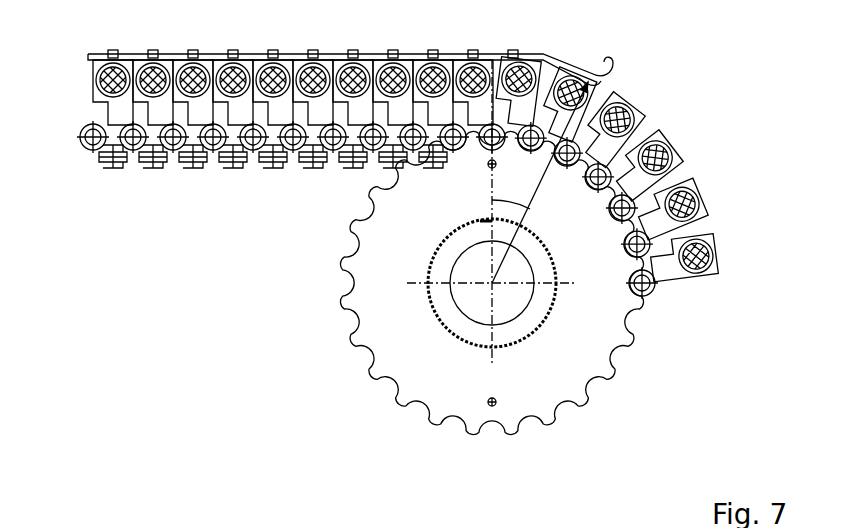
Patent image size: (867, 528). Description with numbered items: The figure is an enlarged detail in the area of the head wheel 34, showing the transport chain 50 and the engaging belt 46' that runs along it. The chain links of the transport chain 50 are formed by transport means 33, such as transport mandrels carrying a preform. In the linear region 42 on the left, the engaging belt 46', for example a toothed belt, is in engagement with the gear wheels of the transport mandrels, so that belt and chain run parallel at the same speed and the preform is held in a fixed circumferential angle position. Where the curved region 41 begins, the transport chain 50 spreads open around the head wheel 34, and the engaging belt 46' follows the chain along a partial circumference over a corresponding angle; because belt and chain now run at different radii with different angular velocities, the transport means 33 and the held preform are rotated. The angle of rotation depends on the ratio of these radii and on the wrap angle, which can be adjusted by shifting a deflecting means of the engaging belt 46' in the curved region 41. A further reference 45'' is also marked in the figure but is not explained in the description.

The transport means 33 is at (667, 157).
The head wheel 34 is at (600, 342).
The curved region 41 is at (653, 178).
The linear region 42 is at (135, 190).
The guide 45'' is at (104, 503).
The engaging belt 46' is at (362, 44).
The transport chain 50 is at (293, 200).